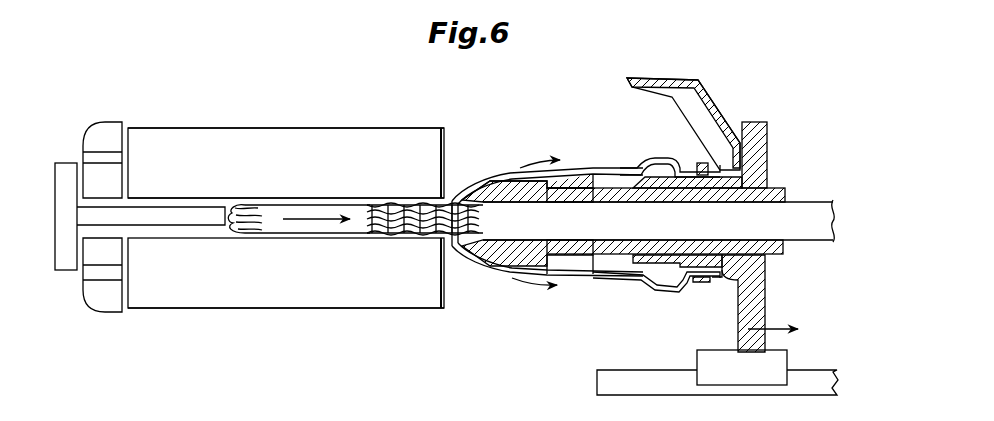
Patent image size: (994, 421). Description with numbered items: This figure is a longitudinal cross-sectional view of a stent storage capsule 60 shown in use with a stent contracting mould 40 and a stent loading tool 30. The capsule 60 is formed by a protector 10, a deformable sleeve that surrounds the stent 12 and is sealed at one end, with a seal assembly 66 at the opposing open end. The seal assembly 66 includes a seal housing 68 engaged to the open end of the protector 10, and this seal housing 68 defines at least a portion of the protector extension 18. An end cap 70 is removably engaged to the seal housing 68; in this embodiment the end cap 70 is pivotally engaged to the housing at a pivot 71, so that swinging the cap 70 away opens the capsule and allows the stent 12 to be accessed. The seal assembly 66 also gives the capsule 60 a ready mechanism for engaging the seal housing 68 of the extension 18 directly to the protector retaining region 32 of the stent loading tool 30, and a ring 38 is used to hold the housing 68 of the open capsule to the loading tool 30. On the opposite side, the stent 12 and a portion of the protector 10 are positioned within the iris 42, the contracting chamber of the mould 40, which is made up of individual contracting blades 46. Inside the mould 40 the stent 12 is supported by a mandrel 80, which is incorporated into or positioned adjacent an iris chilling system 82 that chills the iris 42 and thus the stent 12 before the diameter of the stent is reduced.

The protector 10 is at (280, 223).
The stent 12 is at (428, 237).
The protector extension 18 is at (590, 166).
The stent loading tool 30 is at (782, 188).
The protector retaining region 32 is at (718, 278).
The ring 38 is at (695, 289).
The mould 40 is at (287, 150).
The iris 42 is at (220, 197).
The blades 46 is at (192, 143).
The capsule 60 is at (353, 197).
The seal assembly 66 is at (650, 158).
The seal housing 68 is at (650, 285).
The end cap 70 is at (667, 100).
The pivot 71 is at (770, 140).
The mandrel 80 is at (185, 218).
The iris chilling system 82 is at (105, 133).